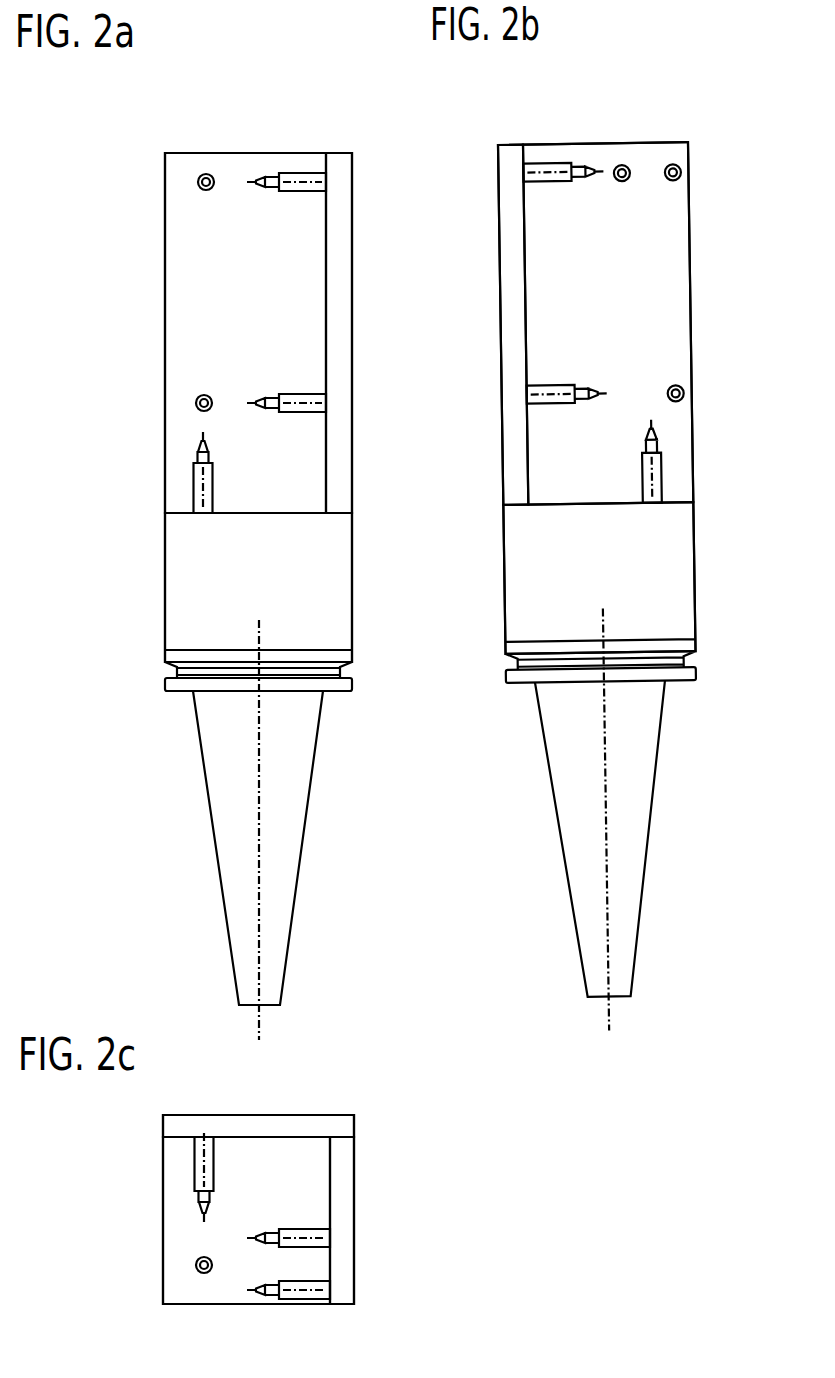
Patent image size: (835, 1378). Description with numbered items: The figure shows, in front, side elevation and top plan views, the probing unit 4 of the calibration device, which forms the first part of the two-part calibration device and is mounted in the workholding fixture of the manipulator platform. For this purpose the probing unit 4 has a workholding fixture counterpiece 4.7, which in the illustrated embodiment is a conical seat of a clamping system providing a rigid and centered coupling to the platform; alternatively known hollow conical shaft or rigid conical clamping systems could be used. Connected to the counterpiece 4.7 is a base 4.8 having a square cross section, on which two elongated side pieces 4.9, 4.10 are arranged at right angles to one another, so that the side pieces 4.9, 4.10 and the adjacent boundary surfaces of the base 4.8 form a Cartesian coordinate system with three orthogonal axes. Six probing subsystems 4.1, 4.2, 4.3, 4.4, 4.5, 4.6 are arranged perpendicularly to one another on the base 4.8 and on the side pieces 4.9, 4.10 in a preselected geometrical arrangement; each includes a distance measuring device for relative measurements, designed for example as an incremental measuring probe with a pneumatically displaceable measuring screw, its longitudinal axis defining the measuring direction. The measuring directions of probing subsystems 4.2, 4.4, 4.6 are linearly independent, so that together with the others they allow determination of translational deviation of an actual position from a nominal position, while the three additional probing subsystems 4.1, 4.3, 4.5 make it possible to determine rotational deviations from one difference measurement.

In FIG. 2a, the probing unit 4 is at (152, 347).
In FIG. 2b, the probing unit 4 is at (708, 355).
In FIG. 2c, the probing unit 4 is at (152, 1262).
In FIG. 2a, the probing subsystem 4.1 is at (322, 398).
In FIG. 2b, the probing subsystem 4.1 is at (684, 395).
In FIG. 2a, the probing subsystem 4.2 is at (313, 182).
In FIG. 2b, the probing subsystem 4.2 is at (681, 171).
In FIG. 2c, the probing subsystem 4.2 is at (320, 1293).
In FIG. 2b, the probing subsystem 4.3 is at (630, 176).
In FIG. 2c, the probing subsystem 4.3 is at (322, 1238).
In FIG. 2a, the probing subsystem 4.4 is at (205, 174).
In FIG. 2b, the probing subsystem 4.4 is at (533, 172).
In FIG. 2c, the probing subsystem 4.4 is at (201, 1163).
In FIG. 2a, the probing subsystem 4.5 is at (196, 403).
In FIG. 2b, the probing subsystem 4.5 is at (577, 398).
In FIG. 2a, the probing subsystem 4.6 is at (205, 477).
In FIG. 2b, the probing subsystem 4.6 is at (662, 476).
In FIG. 2c, the probing subsystem 4.6 is at (196, 1266).
In FIG. 2a, the workholding fixture counterpiece 4.7 is at (232, 803).
In FIG. 2b, the workholding fixture counterpiece 4.7 is at (583, 801).
In FIG. 2a, the base 4.8 is at (205, 568).
In FIG. 2b, the base 4.8 is at (540, 593).
In FIG. 2c, the base 4.8 is at (178, 1213).
In FIG. 2a, the side piece 4.9 is at (193, 248).
In FIG. 2b, the side piece 4.9 is at (510, 287).
In FIG. 2c, the side piece 4.9 is at (332, 1128).
In FIG. 2a, the side piece 4.10 is at (343, 167).
In FIG. 2b, the side piece 4.10 is at (562, 465).
In FIG. 2c, the side piece 4.10 is at (347, 1178).